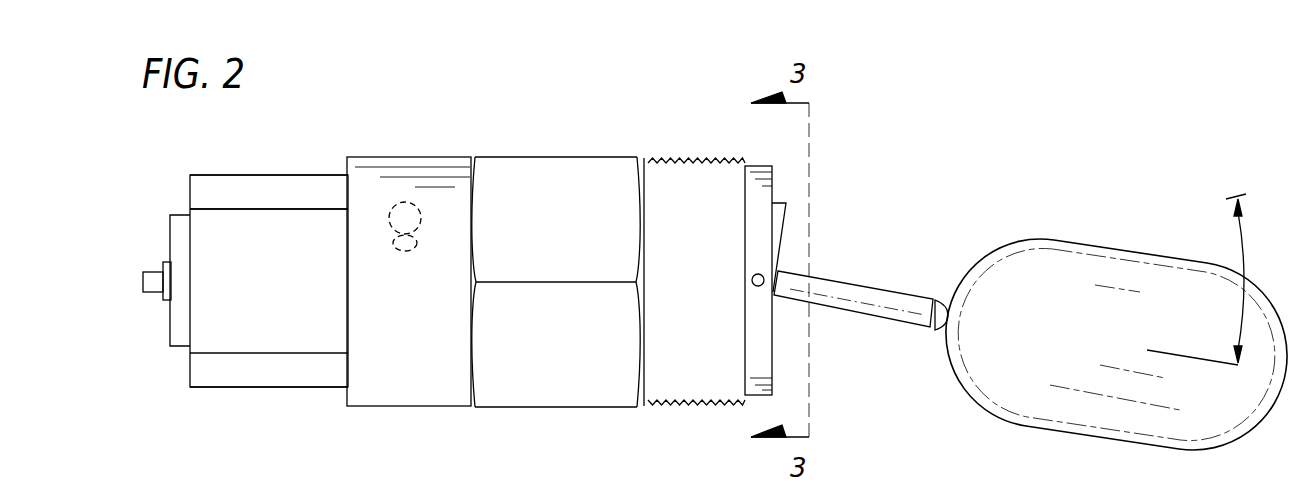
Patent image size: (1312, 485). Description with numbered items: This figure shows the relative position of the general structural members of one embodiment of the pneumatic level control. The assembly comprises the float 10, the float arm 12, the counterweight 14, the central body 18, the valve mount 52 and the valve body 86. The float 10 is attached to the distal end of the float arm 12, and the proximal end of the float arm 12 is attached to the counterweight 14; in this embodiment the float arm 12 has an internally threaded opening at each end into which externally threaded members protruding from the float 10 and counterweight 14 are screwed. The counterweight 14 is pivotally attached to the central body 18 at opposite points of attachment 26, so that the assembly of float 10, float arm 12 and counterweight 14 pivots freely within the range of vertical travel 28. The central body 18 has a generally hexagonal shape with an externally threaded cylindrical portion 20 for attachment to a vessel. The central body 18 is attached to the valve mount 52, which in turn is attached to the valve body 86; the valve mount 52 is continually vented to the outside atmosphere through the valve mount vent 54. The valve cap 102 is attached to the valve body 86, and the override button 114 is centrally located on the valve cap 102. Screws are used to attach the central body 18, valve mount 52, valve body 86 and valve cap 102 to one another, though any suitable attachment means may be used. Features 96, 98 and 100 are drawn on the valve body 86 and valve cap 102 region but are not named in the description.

The float 10 is at (1068, 242).
The float arm 12 is at (865, 315).
The counterweight 14 is at (783, 205).
The central body 18 is at (471, 145).
The externally threaded cylindrical portion 20 is at (697, 400).
The points of attachment 26 is at (764, 277).
The range of vertical travel 28 is at (1243, 238).
The valve mount 52 is at (420, 380).
The valve mount vent 54 is at (400, 204).
The valve body 86 is at (290, 315).
The upper flange 96 is at (228, 186).
The flange surface 98 is at (300, 182).
The lower flange 100 is at (265, 388).
The valve cap 102 is at (177, 348).
The override button 114 is at (152, 270).